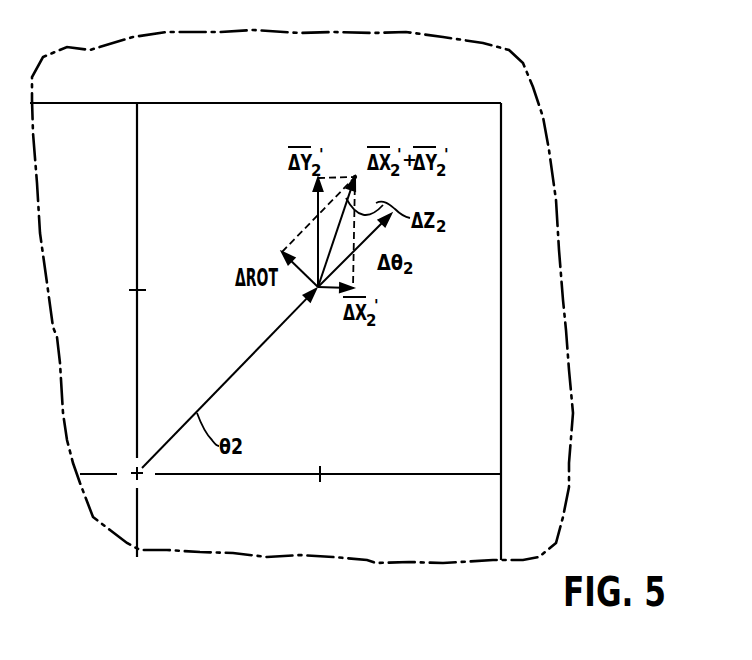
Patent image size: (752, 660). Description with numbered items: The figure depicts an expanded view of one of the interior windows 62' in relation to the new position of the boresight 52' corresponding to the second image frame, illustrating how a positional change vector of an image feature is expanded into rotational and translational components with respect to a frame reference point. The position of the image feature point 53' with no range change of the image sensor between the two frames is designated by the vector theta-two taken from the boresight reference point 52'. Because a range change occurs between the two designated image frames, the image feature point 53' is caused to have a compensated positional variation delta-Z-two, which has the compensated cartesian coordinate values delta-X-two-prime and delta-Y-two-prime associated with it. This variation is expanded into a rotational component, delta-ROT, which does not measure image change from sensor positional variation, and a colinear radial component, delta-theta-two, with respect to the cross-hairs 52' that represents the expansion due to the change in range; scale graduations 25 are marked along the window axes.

The interior window 62' is at (265, 331).
The boresight 52' is at (110, 451).
The image feature point 53' is at (350, 152).
The scale graduation marks 25 is at (217, 396).